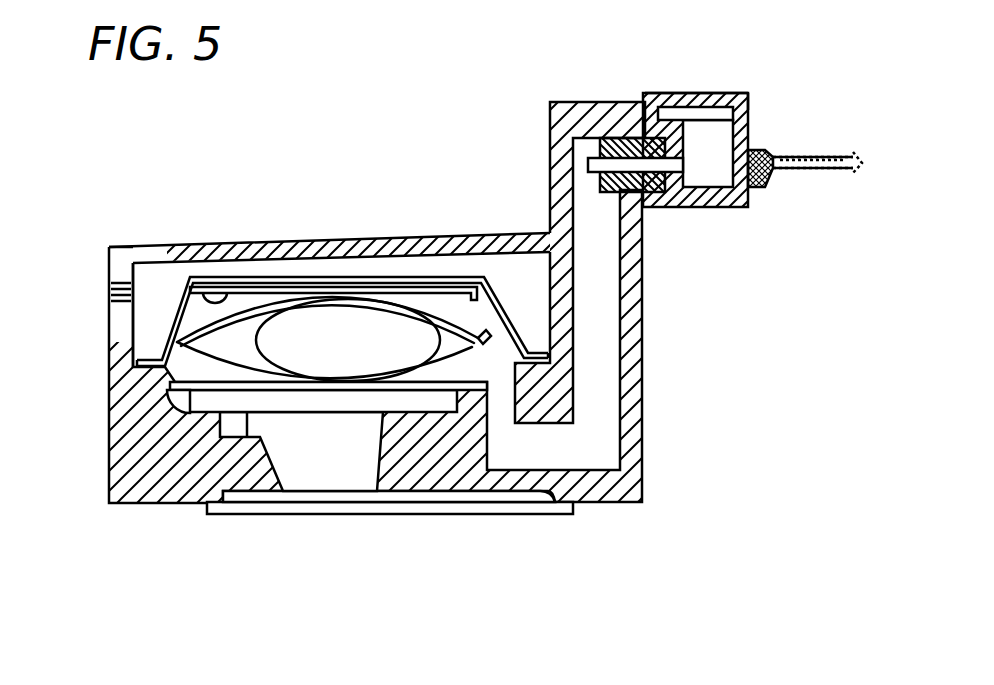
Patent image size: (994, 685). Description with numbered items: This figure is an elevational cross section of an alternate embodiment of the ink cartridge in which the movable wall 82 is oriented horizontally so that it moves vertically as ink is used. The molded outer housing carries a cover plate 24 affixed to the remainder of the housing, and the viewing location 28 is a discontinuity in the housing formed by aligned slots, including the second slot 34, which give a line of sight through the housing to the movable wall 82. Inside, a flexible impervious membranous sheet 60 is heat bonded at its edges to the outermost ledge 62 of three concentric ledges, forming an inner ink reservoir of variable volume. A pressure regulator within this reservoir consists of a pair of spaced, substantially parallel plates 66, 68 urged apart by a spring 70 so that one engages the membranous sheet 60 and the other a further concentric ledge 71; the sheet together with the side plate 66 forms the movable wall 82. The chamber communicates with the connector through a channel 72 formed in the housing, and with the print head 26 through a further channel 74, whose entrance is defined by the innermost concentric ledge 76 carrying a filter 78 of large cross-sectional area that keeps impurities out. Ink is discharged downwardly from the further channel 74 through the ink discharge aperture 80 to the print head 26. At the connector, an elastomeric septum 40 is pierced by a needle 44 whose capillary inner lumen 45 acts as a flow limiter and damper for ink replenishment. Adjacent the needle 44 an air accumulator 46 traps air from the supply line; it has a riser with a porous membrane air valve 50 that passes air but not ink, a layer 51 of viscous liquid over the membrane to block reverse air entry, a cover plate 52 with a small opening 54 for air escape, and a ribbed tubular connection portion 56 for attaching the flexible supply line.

The cover plate 24 is at (500, 238).
The print head 26 is at (520, 508).
The viewing location 28 is at (90, 257).
The second slot 34 is at (123, 275).
The septum 40 is at (605, 137).
The needle 44 is at (570, 150).
The inner lumen 45 is at (707, 160).
The air accumulator 46 is at (703, 208).
The air valve 50 is at (748, 127).
The layer of liquid 51 is at (748, 102).
The cover plate 52 is at (725, 92).
The opening 54 is at (688, 85).
The ribbed tubular connection portion 56 is at (762, 183).
The membranous sheet 60 is at (190, 300).
The outermost ledge 62 is at (143, 378).
The plate 66 is at (205, 290).
The plate 68 is at (258, 378).
The spring 70 is at (447, 348).
The further concentric ledge 71 is at (135, 405).
The channel 72 is at (600, 383).
The further channel 74 is at (328, 474).
The innermost concentric ledge 76 is at (133, 438).
The filter 78 is at (247, 437).
The ink discharge aperture 80 is at (410, 497).
The movable wall 82 is at (358, 276).